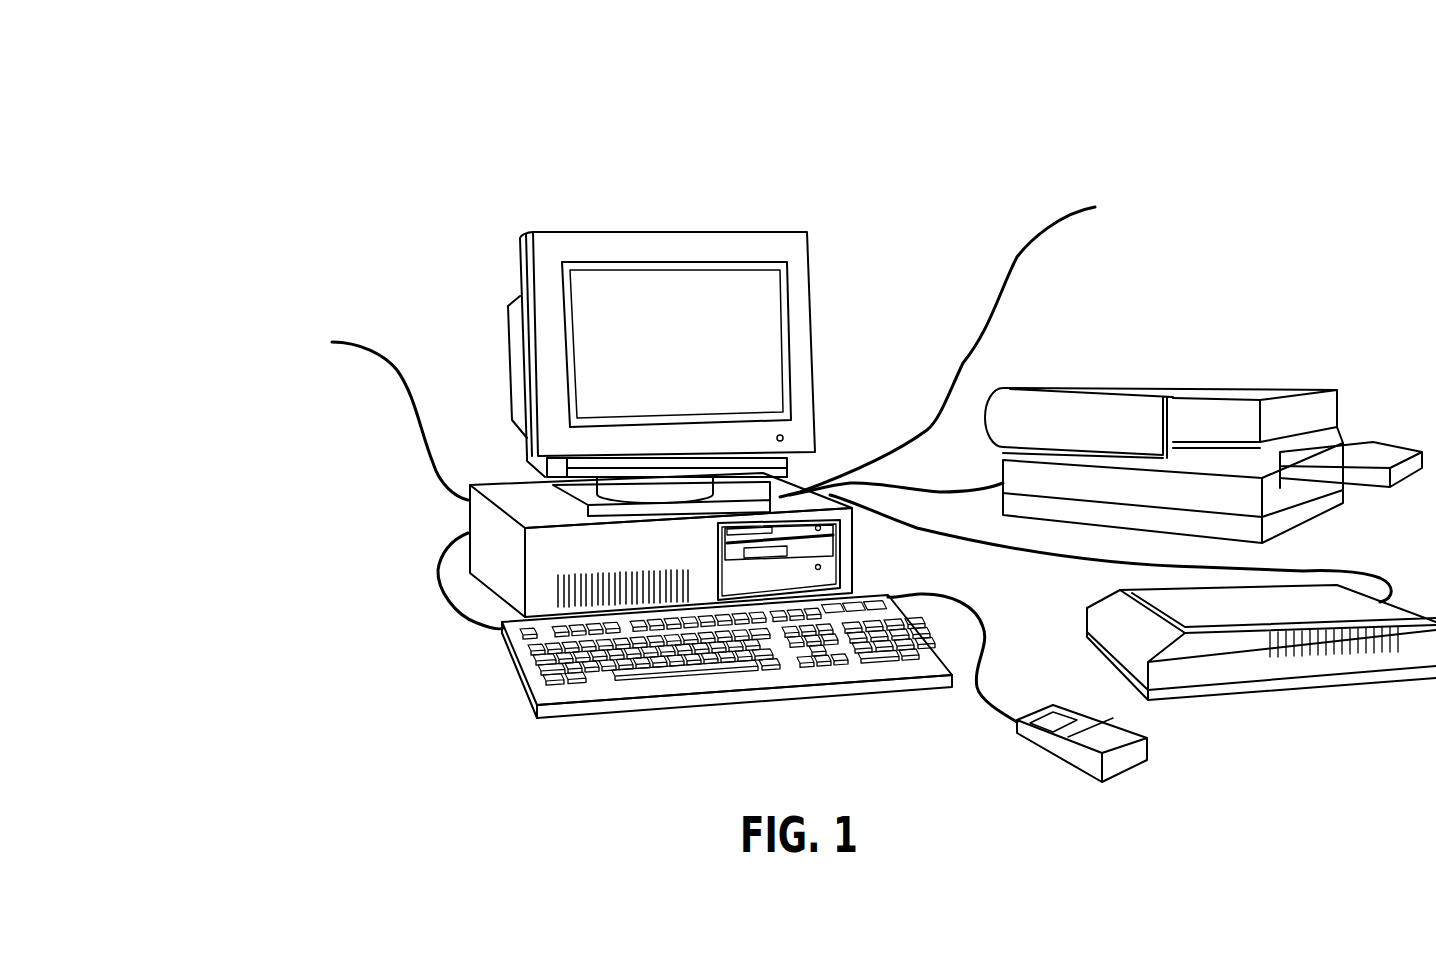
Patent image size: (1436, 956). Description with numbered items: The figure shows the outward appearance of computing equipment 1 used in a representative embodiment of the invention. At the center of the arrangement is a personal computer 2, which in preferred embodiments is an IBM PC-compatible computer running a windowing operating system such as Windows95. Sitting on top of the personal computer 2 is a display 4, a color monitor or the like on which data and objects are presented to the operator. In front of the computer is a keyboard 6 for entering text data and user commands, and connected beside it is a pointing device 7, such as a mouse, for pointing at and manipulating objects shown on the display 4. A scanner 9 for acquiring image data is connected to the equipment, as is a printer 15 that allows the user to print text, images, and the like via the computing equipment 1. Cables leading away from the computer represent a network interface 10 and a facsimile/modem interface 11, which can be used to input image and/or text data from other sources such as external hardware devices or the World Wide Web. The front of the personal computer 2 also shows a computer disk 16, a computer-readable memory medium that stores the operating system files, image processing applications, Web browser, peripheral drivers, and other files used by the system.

The computing equipment 1 is at (856, 237).
The personal computer 2 is at (846, 429).
The display 4 is at (637, 231).
The keyboard 6 is at (607, 695).
The pointing device 7 is at (1123, 773).
The scanner 9 is at (1305, 693).
The network interface 10 is at (1023, 255).
The facsimile/modem interface 11 is at (407, 387).
The printer 15 is at (1123, 383).
The computer disk 16 is at (803, 550).